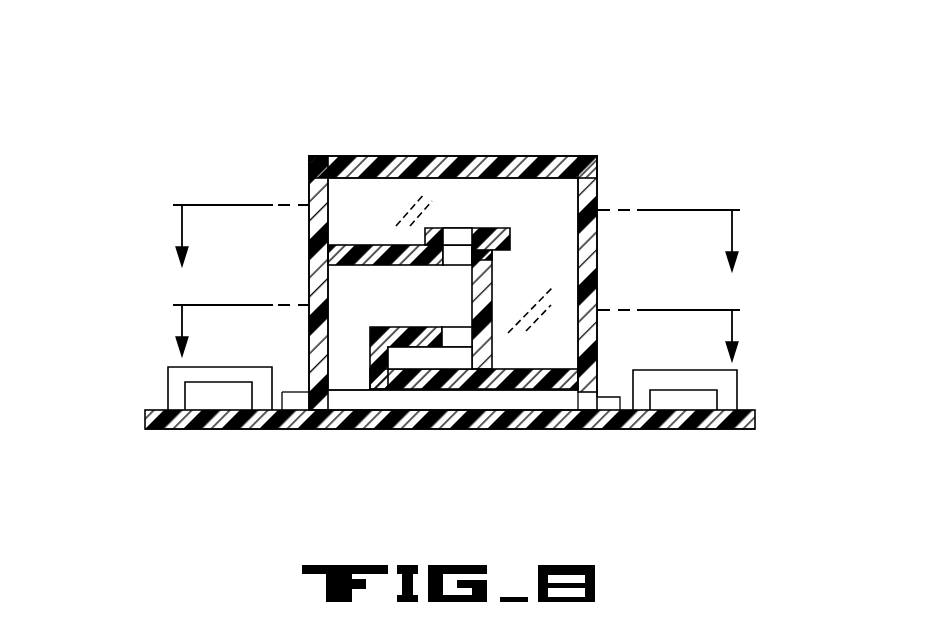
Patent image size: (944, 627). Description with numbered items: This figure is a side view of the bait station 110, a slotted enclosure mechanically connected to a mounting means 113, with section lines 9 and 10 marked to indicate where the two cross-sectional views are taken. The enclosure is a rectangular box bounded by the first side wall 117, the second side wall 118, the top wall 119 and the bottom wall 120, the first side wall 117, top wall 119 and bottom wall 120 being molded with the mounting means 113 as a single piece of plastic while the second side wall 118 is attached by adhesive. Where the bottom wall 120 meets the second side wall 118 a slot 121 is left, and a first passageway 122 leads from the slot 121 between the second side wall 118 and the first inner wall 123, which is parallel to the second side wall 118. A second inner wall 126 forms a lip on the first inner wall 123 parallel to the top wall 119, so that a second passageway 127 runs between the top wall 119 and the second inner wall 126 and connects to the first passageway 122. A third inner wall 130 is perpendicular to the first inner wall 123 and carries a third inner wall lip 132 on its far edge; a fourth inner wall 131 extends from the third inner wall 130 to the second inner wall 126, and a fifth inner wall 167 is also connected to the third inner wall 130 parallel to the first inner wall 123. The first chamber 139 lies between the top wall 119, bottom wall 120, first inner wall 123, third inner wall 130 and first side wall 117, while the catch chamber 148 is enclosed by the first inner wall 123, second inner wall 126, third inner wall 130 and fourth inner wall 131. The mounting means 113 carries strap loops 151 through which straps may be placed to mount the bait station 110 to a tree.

The bait station 110 is at (176, 100).
The mounting means 113 is at (186, 430).
The first side wall 117 is at (475, 157).
The second side wall 118 is at (562, 429).
The top wall 119 is at (311, 166).
The bottom wall 120 is at (512, 236).
The slot 121 is at (594, 402).
The first passageway 122 is at (476, 389).
The first inner wall 123 is at (513, 367).
The second inner wall 126 is at (370, 366).
The second passageway 127 is at (353, 367).
The third inner wall 130 is at (492, 290).
The fourth inner wall 131 is at (328, 252).
The third inner wall lip 132 is at (580, 178).
The first chamber 139 is at (500, 200).
The catch chamber 148 is at (423, 358).
The strap loops 151 is at (168, 389).
The fifth inner wall 167 is at (388, 245).
The line 9— 9 is at (451, 238).
The line 10— 10 is at (455, 335).